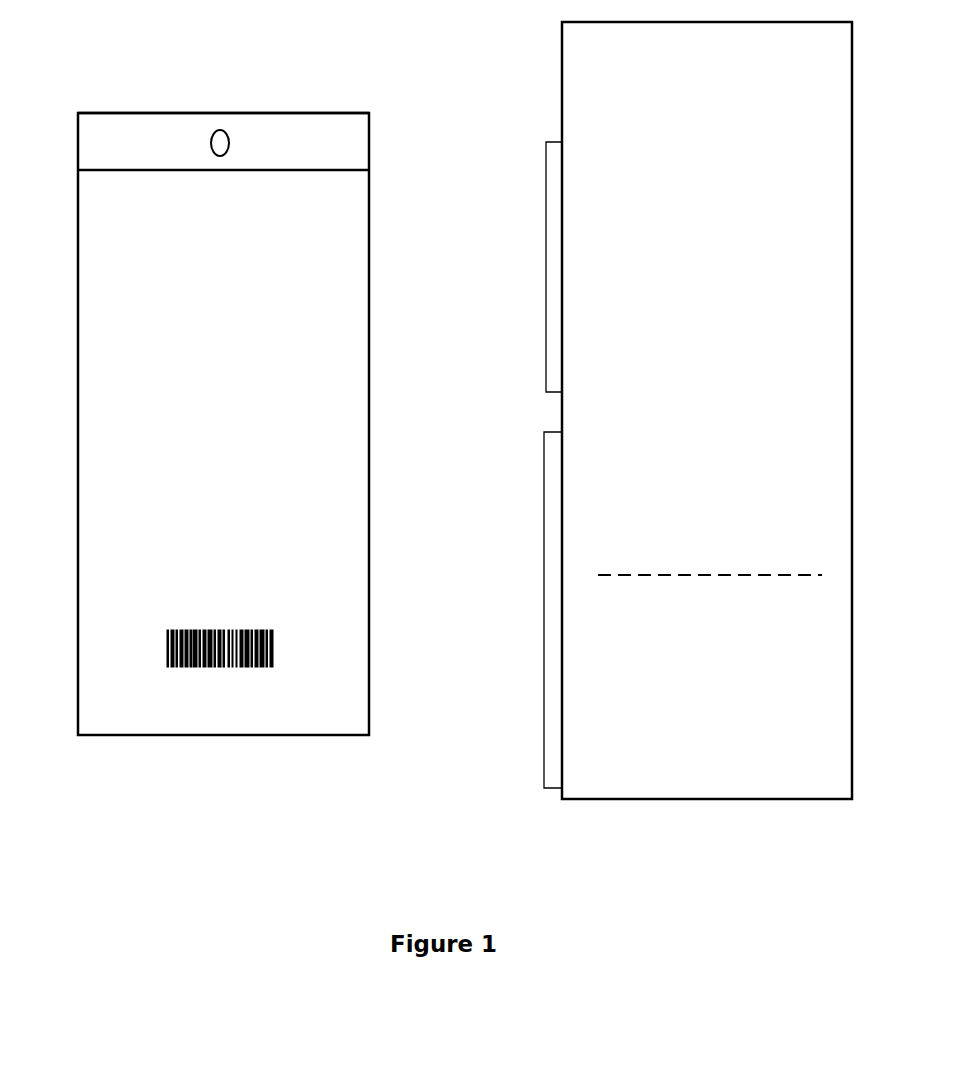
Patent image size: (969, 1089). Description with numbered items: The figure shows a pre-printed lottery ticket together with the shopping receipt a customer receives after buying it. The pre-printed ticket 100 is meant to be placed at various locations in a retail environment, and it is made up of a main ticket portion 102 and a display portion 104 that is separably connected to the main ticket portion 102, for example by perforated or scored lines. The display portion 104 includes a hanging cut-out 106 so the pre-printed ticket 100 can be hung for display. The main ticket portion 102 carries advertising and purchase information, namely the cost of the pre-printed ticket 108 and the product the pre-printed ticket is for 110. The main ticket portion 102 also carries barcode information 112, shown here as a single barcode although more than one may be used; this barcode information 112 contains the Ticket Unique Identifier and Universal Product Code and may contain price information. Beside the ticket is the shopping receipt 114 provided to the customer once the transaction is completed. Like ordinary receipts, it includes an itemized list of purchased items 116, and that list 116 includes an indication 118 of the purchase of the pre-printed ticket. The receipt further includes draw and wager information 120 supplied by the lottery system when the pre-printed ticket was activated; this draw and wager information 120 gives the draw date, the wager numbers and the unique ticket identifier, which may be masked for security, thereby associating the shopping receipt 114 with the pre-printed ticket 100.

The pre-printed ticket 100 is at (117, 112).
The main ticket portion 102 is at (347, 370).
The display portion 104 is at (327, 135).
The hanging cut-out 106 is at (222, 147).
The cost of the pre-printed ticket 108 is at (353, 203).
The product the pre-printed ticket is for 110 is at (147, 295).
The barcode information 112 is at (165, 650).
The shopping receipt 114 is at (562, 55).
The itemized list of purchased items 116 is at (546, 267).
The indication of the purchase of the pre-printed ticket 118 is at (802, 233).
The draw and wager information 120 is at (544, 610).